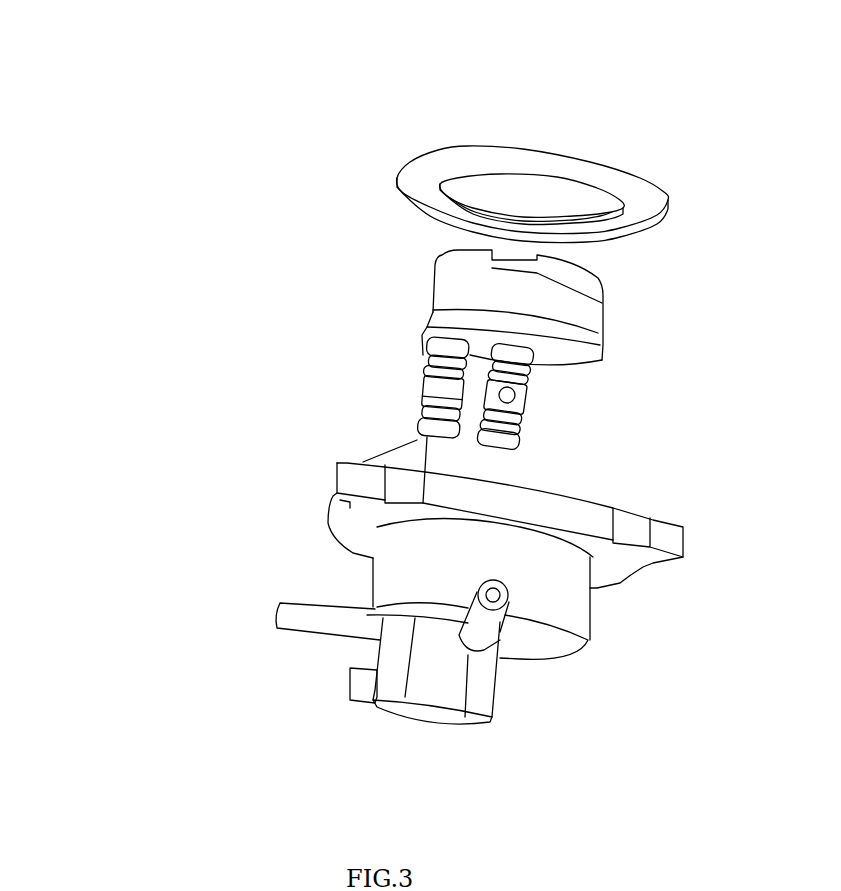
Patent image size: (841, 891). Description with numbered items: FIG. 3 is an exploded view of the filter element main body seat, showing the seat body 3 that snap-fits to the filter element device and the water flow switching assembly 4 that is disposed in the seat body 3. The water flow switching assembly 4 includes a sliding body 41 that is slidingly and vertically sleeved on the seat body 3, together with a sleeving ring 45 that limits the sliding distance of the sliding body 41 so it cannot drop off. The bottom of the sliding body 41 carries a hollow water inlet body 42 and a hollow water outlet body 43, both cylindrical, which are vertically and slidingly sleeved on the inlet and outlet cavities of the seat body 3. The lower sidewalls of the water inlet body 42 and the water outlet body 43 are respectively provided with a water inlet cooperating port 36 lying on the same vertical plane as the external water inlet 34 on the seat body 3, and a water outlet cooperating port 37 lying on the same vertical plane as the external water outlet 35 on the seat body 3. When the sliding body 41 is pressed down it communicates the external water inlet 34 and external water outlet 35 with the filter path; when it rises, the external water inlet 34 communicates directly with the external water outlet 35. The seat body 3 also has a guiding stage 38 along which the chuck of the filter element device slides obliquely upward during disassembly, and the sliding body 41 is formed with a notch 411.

The seat body 3 is at (137, 392).
The water flow switching assembly 4 is at (160, 157).
The external water inlet 34 is at (303, 618).
The external water outlet 35 is at (497, 613).
The water inlet cooperating port 36 is at (427, 383).
The water outlet cooperating port 37 is at (523, 410).
The guiding stage 38 is at (400, 462).
The sliding body 41 is at (448, 300).
The notch 411 is at (603, 303).
The water inlet body 42 is at (423, 355).
The water outlet body 43 is at (525, 382).
The sleeving ring 45 is at (425, 167).